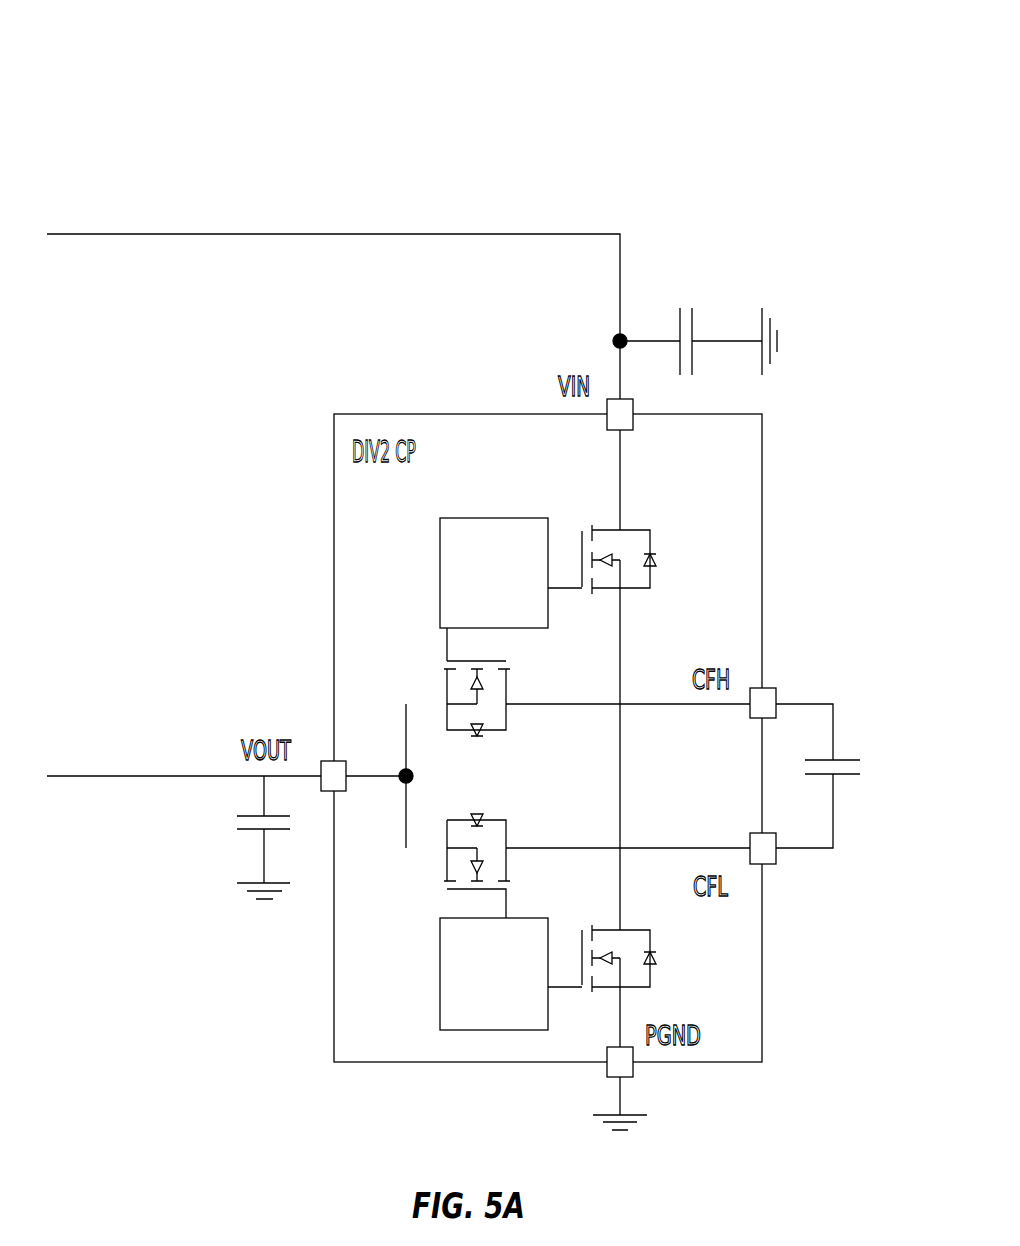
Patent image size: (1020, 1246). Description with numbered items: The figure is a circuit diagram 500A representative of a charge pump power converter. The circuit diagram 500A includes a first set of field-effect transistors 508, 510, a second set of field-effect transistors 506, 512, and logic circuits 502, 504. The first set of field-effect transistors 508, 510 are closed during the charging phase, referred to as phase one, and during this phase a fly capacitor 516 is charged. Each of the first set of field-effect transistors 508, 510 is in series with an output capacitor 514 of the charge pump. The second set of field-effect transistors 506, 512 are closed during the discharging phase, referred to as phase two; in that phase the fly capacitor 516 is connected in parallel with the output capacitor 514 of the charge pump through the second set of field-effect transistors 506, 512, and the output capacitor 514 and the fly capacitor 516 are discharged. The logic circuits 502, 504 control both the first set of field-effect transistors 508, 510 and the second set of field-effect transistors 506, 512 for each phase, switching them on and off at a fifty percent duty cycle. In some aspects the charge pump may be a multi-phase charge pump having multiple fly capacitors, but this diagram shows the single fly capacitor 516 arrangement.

The circuit diagram 500A is at (122, 96).
The logic circuit 502 is at (440, 561).
The logic circuit 504 is at (440, 975).
The field-effect transistor 506 is at (490, 735).
The field-effect transistor 508 is at (447, 860).
The field-effect transistor 510 is at (632, 530).
The field-effect transistor 512 is at (632, 930).
The output capacitor 514 is at (247, 832).
The fly capacitor 516 is at (843, 778).